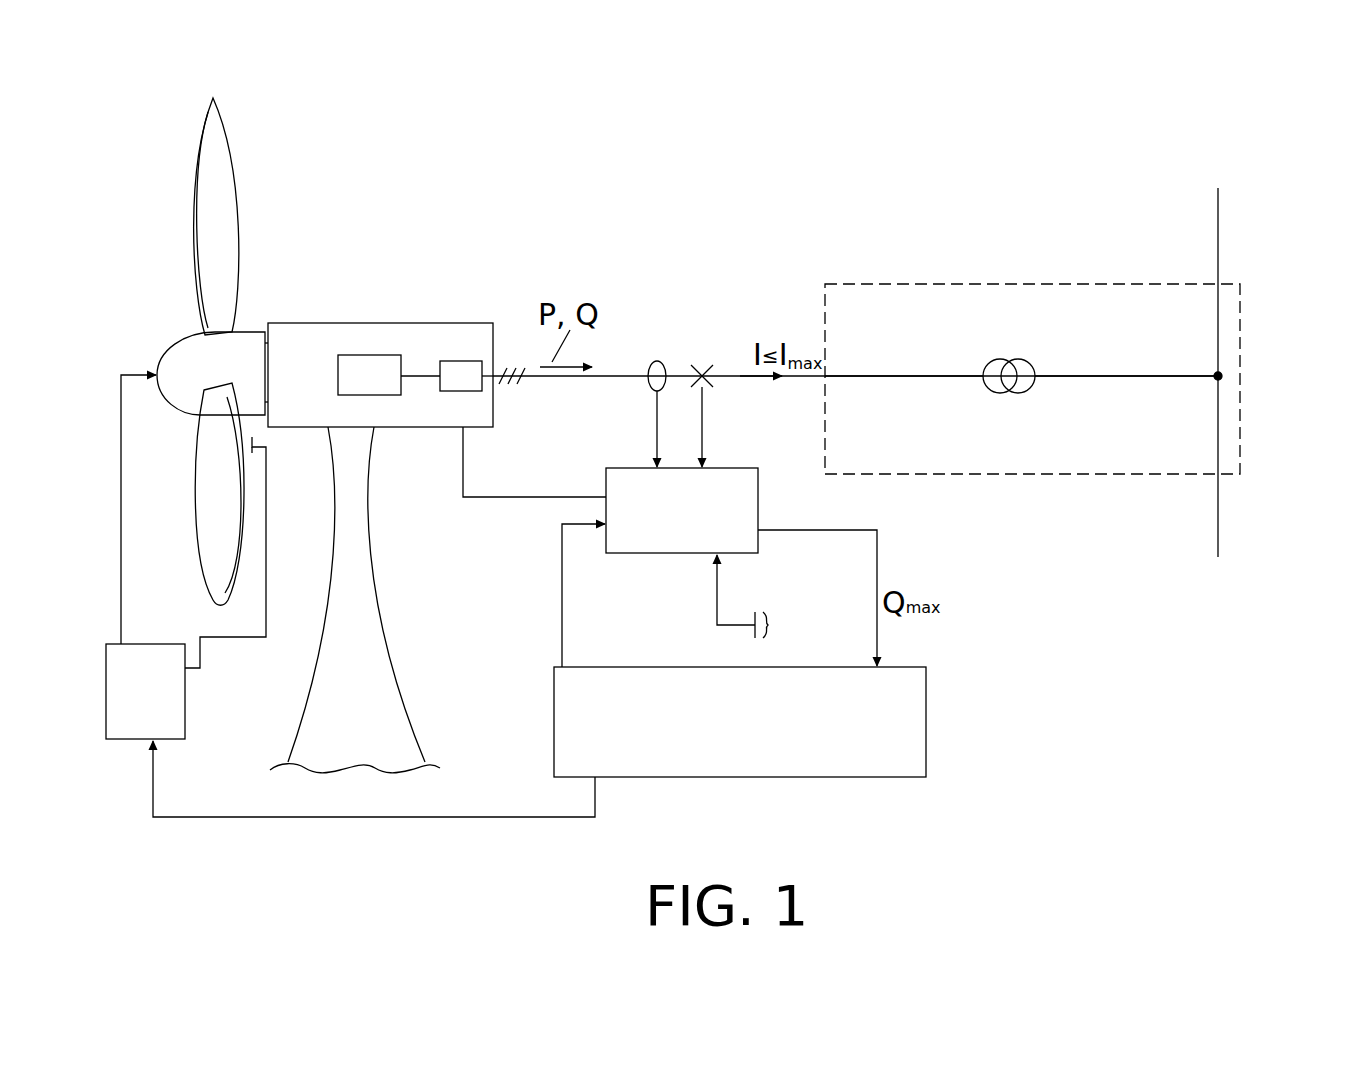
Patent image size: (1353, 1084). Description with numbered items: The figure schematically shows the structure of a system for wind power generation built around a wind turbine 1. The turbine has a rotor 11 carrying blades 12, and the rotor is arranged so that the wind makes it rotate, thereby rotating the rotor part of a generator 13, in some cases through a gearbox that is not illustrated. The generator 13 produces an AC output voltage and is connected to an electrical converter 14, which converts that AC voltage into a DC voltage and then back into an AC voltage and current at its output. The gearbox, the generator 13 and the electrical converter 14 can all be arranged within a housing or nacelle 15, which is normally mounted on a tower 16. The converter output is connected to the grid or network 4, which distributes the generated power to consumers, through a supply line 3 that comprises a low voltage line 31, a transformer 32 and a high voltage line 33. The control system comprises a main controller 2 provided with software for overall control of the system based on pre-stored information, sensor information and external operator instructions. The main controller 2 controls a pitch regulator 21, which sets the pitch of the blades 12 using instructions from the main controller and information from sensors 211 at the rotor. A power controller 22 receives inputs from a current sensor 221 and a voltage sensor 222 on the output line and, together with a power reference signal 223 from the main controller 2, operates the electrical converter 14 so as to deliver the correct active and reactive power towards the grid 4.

The wind turbine 1 is at (360, 170).
The rotor 11 is at (185, 360).
The blades 12 is at (205, 220).
The generator 13 is at (378, 365).
The electrical converter 14 is at (468, 370).
The nacelle 15 is at (290, 328).
The tower 16 is at (372, 625).
The main controller 2 is at (740, 722).
The pitch regulator 21 is at (145, 691).
The sensors 211 is at (262, 455).
The power controller 22 is at (637, 554).
The current sensor 221 is at (660, 360).
The voltage sensor 222 is at (704, 372).
The power reference signal 223 is at (562, 645).
The supply line 3 is at (905, 284).
The low voltage line 31 is at (898, 380).
The transformer 32 is at (1008, 390).
The high voltage line 33 is at (1117, 380).
The grid 4 is at (1220, 537).